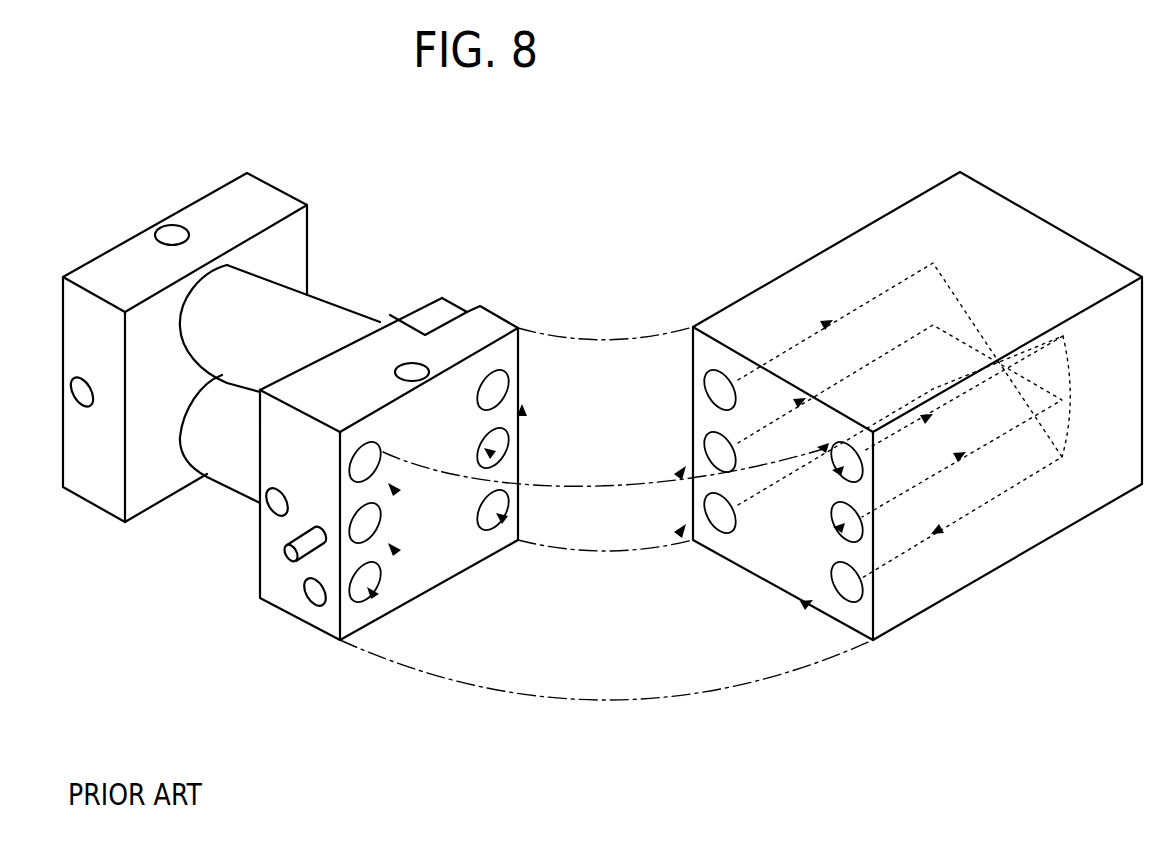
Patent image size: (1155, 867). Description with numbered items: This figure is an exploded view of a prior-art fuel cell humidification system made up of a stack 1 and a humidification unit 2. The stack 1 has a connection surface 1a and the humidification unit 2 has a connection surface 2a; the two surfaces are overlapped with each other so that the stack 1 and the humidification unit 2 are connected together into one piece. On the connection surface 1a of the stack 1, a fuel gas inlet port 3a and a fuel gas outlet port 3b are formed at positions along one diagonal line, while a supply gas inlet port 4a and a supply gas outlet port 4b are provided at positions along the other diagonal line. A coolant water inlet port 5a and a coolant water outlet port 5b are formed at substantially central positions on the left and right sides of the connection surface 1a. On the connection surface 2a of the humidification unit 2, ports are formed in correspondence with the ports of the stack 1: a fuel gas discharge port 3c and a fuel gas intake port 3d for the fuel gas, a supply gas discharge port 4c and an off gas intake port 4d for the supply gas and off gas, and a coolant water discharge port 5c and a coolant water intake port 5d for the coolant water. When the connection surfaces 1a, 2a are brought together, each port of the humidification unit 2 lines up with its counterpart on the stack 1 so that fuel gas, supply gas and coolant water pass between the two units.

The stack 1 is at (795, 239).
The connection surface 1a is at (750, 573).
The humidification unit 2 is at (376, 268).
The connection surface 2a is at (458, 575).
The fuel gas inlet port 3a is at (861, 463).
The fuel gas outlet port 3b is at (705, 512).
The fuel gas discharge port 3c is at (351, 471).
The fuel gas intake port 3d is at (507, 508).
The supply gas inlet port 4a is at (705, 391).
The supply gas outlet port 4b is at (833, 578).
The supply gas discharge port 4c is at (507, 387).
The off gas intake port 4d is at (374, 579).
The coolant water inlet port 5a is at (834, 518).
The coolant water outlet port 5b is at (705, 451).
The coolant water discharge port 5c is at (373, 519).
The coolant water intake port 5d is at (507, 446).